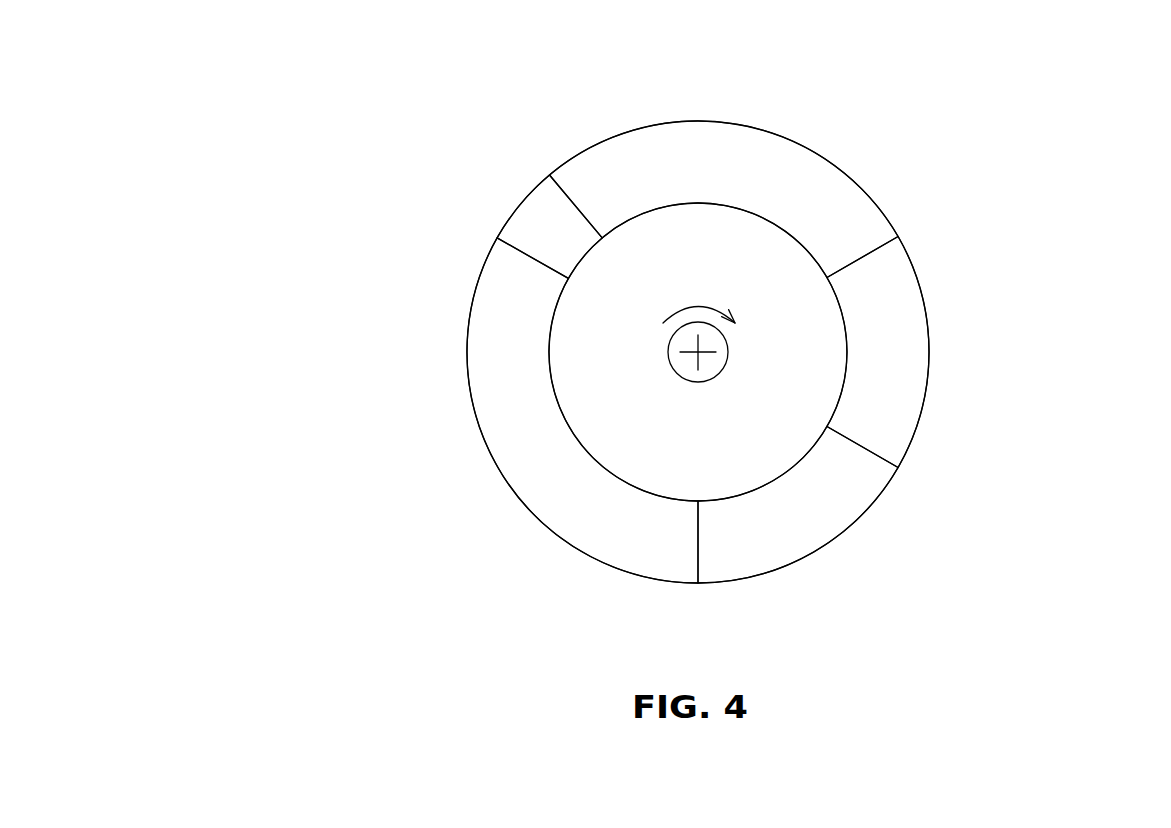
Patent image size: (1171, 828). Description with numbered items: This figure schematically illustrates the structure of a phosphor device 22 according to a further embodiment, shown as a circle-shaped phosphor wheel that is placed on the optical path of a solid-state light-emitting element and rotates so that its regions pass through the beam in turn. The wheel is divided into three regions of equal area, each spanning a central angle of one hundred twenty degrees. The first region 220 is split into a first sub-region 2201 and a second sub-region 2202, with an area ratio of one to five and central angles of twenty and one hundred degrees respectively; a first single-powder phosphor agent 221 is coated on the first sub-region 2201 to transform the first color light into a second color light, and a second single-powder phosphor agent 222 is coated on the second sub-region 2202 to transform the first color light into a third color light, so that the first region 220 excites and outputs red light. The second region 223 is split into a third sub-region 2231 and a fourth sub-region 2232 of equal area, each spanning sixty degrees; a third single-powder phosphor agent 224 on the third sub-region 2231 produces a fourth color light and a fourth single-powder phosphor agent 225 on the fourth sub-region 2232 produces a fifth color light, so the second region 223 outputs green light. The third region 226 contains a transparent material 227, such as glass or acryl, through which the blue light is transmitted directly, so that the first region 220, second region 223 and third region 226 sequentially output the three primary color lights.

The phosphor device 22 is at (215, 294).
The first region 220 is at (368, 68).
The first sub-region 2201 is at (525, 197).
The second sub-region 2202 is at (603, 140).
The first single-powder phosphor agent 221 is at (549, 226).
The second single-powder phosphor agent 222 is at (724, 199).
The second region 223 is at (1085, 450).
The third sub-region 2231 is at (922, 415).
The fourth sub-region 2232 is at (853, 523).
The third single-powder phosphor agent 224 is at (878, 352).
The fourth single-powder phosphor agent 225 is at (798, 505).
The third region 226 is at (505, 478).
The transparent material 227 is at (582, 410).